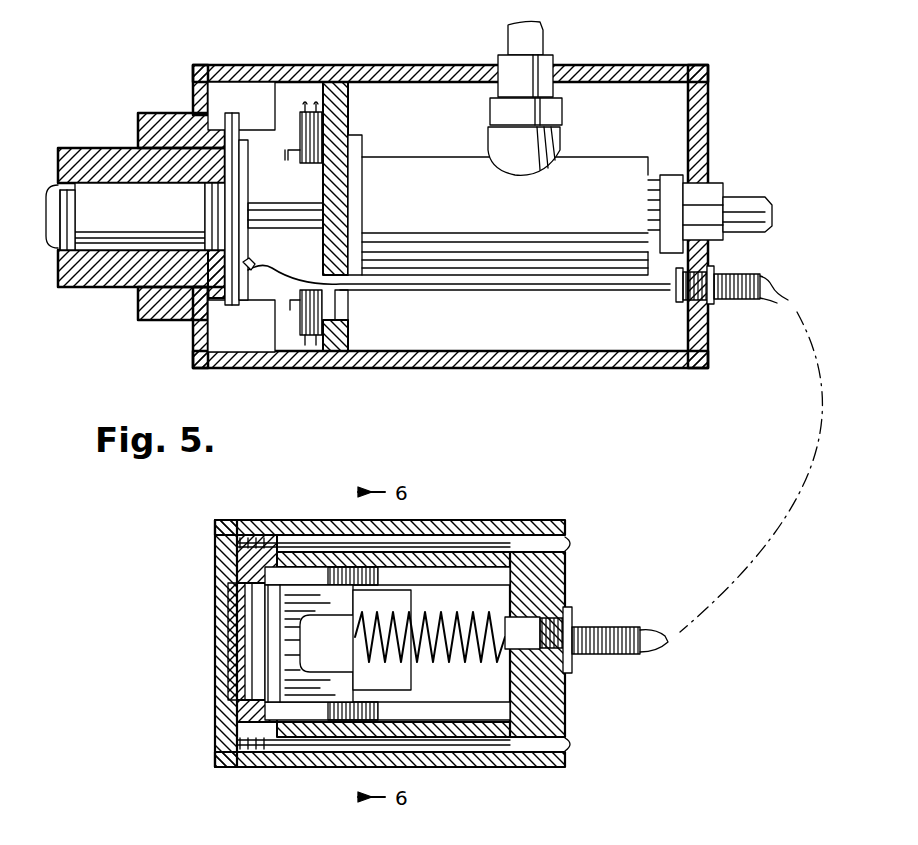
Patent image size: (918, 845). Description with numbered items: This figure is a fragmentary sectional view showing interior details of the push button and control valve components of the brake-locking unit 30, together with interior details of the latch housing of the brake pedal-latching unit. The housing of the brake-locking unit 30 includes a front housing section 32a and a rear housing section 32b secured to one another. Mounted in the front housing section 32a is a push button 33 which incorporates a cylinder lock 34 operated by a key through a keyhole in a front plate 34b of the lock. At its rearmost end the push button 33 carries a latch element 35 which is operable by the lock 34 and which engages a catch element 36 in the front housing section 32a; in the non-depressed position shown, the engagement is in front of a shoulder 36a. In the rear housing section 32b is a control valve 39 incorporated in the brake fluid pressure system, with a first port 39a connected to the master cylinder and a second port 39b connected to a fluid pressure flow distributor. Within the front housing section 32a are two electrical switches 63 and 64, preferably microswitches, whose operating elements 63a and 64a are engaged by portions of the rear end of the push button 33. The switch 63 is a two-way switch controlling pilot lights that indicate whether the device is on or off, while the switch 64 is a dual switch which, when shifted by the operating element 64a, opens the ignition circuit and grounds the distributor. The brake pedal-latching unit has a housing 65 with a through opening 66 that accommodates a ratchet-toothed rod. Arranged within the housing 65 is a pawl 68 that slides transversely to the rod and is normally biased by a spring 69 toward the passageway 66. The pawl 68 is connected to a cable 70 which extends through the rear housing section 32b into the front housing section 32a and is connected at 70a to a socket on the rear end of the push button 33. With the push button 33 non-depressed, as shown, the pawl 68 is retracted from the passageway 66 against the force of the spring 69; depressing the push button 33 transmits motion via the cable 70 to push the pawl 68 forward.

The brake-locking unit 30 is at (424, 187).
The front housing section 32a is at (262, 68).
The rear housing section 32b is at (640, 78).
The push button 33 is at (103, 155).
The cylinder lock 34 is at (102, 258).
The front plate 34b is at (44, 190).
The latch element 35 is at (181, 312).
The catch element 36 is at (268, 92).
The shoulder 36a is at (241, 112).
The control valve 39 is at (405, 160).
The first port 39a is at (503, 145).
The second port 39b is at (722, 190).
The electrical switch 63 is at (316, 128).
The switch operating element 63a is at (288, 152).
The electrical switch 64 is at (335, 366).
The switch operating element 64a is at (292, 295).
The housing 65 is at (476, 522).
The through opening 66 is at (236, 690).
The pawl 68 is at (297, 695).
The spring 69 is at (448, 655).
The cable 70 is at (641, 632).
The cable connection 70a is at (272, 272).